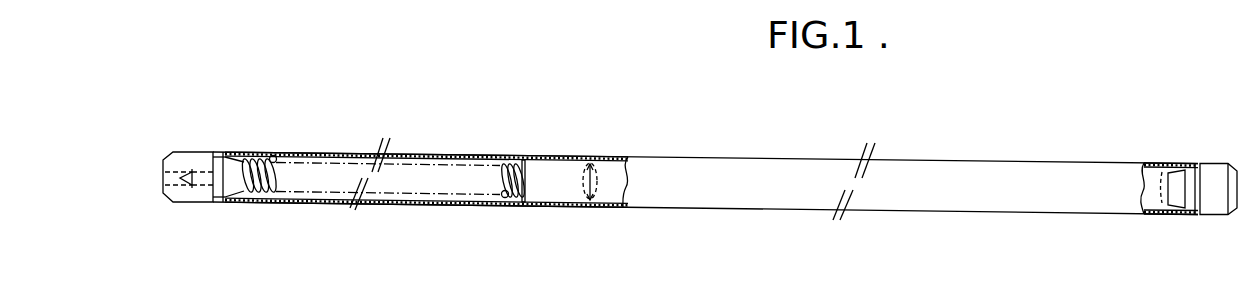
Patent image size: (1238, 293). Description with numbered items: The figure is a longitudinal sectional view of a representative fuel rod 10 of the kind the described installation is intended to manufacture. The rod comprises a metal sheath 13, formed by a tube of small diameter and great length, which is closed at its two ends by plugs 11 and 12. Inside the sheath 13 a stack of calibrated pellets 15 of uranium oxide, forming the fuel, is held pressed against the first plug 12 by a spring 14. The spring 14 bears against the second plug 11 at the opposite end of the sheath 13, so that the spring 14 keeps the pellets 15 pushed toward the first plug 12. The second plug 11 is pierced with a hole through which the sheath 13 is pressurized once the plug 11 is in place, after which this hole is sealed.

The fuel rod 10 is at (641, 146).
The second plug 11 is at (200, 158).
The first plug 12 is at (1207, 170).
The metal sheath 13 is at (449, 151).
The spring 14 is at (511, 163).
The calibrated pellets 15 is at (557, 170).